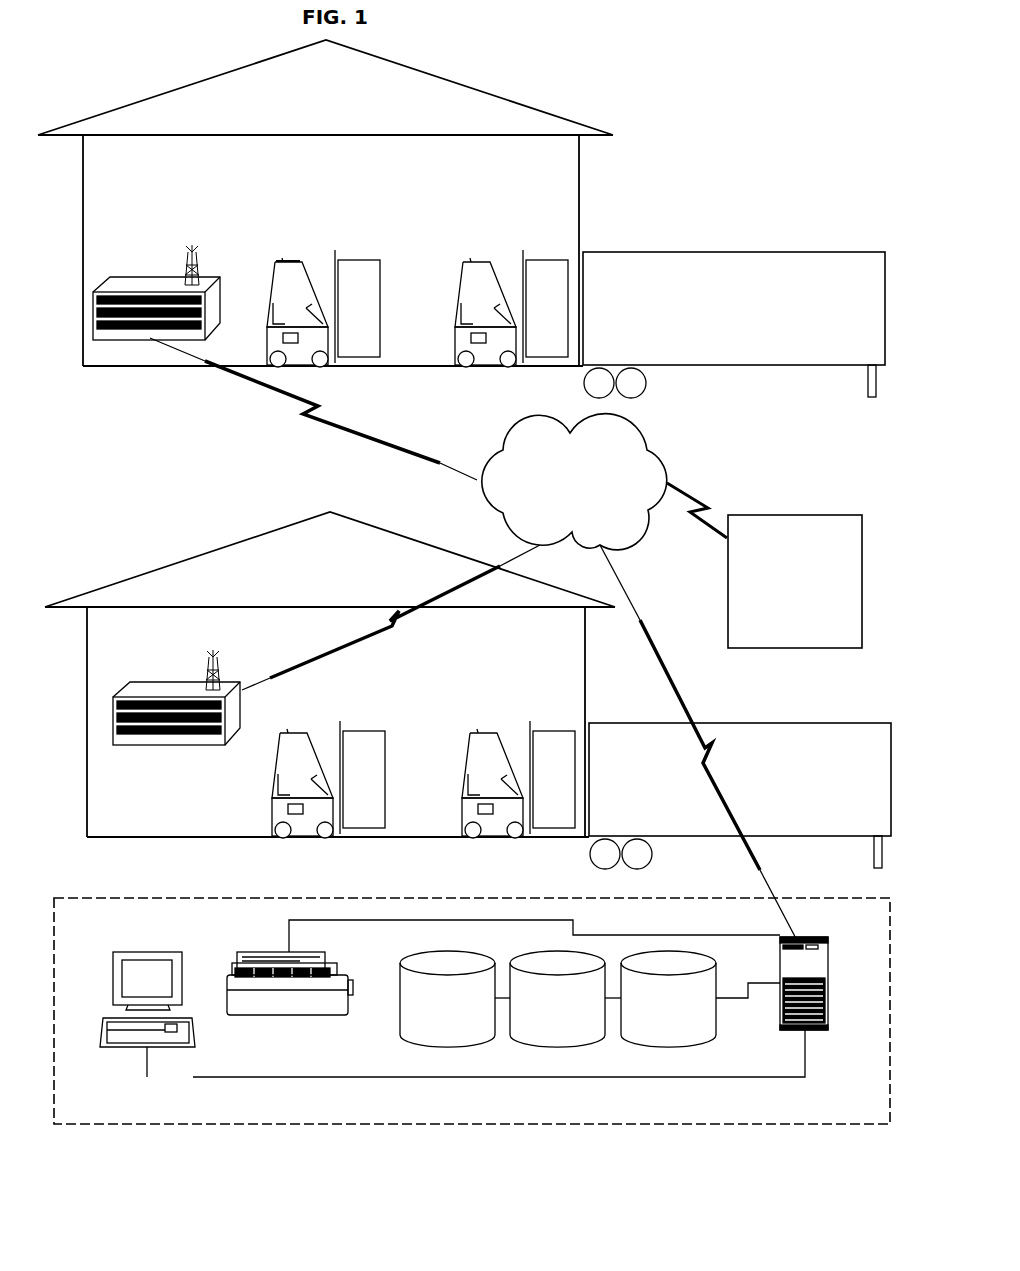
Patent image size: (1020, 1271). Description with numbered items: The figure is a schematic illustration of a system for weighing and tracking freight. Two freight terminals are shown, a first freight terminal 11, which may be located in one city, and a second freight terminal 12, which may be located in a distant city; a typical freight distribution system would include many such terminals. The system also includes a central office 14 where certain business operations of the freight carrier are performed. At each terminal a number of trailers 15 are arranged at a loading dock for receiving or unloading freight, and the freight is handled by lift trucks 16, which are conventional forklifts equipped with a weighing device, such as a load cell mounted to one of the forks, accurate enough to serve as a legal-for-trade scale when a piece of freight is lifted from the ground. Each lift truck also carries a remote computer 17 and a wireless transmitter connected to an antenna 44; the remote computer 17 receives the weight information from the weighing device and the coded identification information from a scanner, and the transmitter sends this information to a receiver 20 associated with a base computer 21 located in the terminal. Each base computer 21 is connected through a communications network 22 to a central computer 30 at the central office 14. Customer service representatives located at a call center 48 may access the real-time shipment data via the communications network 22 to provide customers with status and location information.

The first freight terminal 11 is at (515, 103).
The second freight terminal 12 is at (415, 539).
The central office 14 is at (472, 994).
The trailers 15 is at (737, 560).
The lift trucks 16 is at (303, 263).
The remote computer 17 is at (283, 337).
The receiver 20 is at (200, 267).
The base computer 21 is at (143, 287).
The communications network 22 is at (574, 482).
The central computer 30 is at (828, 963).
The antenna 44 is at (282, 262).
The call center 48 is at (795, 581).